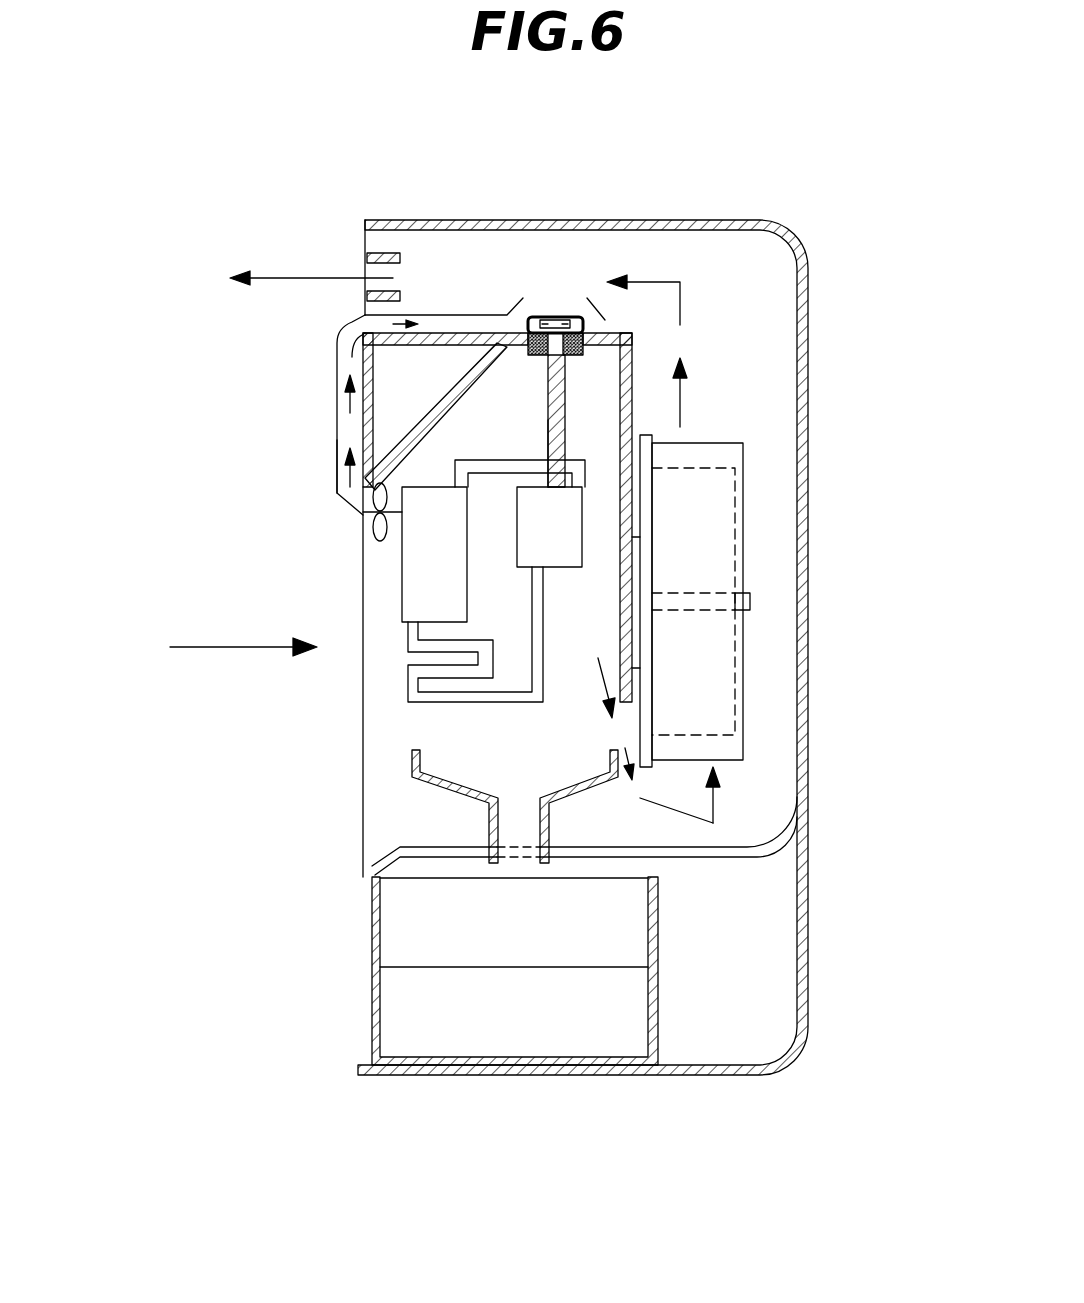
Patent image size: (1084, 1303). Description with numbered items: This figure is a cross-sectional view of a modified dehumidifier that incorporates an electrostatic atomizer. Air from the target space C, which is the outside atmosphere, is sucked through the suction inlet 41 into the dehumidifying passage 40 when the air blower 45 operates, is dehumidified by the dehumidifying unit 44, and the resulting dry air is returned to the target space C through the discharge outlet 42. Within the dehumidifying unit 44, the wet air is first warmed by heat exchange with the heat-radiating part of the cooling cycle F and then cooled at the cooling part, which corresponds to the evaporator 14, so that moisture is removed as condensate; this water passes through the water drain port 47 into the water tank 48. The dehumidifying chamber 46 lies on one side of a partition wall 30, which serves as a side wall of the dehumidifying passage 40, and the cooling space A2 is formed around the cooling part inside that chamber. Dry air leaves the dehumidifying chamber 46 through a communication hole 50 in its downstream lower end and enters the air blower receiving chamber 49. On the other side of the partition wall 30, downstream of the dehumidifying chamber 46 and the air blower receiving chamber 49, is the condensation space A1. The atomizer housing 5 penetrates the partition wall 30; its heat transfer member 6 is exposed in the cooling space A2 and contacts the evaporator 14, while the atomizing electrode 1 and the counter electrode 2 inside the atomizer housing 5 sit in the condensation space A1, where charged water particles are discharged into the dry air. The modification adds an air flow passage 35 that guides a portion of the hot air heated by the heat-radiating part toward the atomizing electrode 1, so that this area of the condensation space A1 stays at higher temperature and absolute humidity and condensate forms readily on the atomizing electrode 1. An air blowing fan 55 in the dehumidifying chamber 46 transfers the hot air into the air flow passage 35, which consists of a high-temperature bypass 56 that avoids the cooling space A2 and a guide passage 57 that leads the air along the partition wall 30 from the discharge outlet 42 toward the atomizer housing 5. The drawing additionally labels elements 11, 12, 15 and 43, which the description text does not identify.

The atomizing electrode 1 is at (577, 318).
The counter electrode 2 is at (547, 318).
The atomizer housing 5 is at (556, 360).
The heat transfer member 6 is at (548, 428).
The sensor terminal 15 is at (558, 318).
The partition wall 30 is at (607, 320).
The dehumidifying passage 40 is at (762, 793).
The suction inlet 41 is at (362, 617).
The discharge outlet 42 is at (365, 253).
The exhaust vents 43 is at (363, 318).
The dehumidifying unit 44 is at (408, 467).
The air blower 45 is at (745, 515).
The dehumidifying chamber 46 is at (362, 328).
The water drain port 47 is at (487, 815).
The water tank 48 is at (371, 1010).
The air blower receiving chamber 49 is at (775, 647).
The communication hole 50 is at (627, 730).
The air blowing fan 55 is at (368, 519).
The high-temperature bypass 56 is at (345, 365).
The guide passage 57 is at (432, 312).
The heater block 11 is at (402, 583).
The heater pipe 12 is at (417, 668).
The evaporator 14 is at (528, 547).
The air flow passage 35 is at (337, 412).
The condensation space A1 is at (542, 234).
The cooling space A2 is at (614, 416).
The target space C is at (130, 638).
The cooling cycle F is at (396, 738).